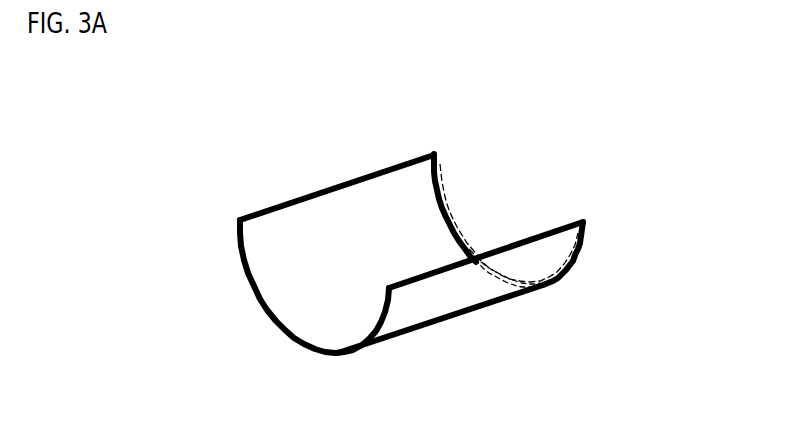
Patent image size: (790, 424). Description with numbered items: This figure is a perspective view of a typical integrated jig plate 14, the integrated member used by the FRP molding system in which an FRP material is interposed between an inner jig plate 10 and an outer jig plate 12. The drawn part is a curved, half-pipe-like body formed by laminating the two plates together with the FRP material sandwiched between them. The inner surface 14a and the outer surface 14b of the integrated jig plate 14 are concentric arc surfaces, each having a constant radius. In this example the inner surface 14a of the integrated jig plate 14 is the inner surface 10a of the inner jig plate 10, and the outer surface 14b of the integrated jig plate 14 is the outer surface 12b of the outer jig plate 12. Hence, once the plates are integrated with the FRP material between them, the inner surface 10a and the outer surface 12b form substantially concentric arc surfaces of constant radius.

The integrated jig plate 14 is at (233, 216).
The inner surface 14a is at (393, 195).
The inner surface 10a is at (442, 181).
The inner jig plate 10 is at (433, 236).
The outer surface 14b is at (413, 313).
The outer surface 12b is at (482, 329).
The outer jig plate 12 is at (511, 305).